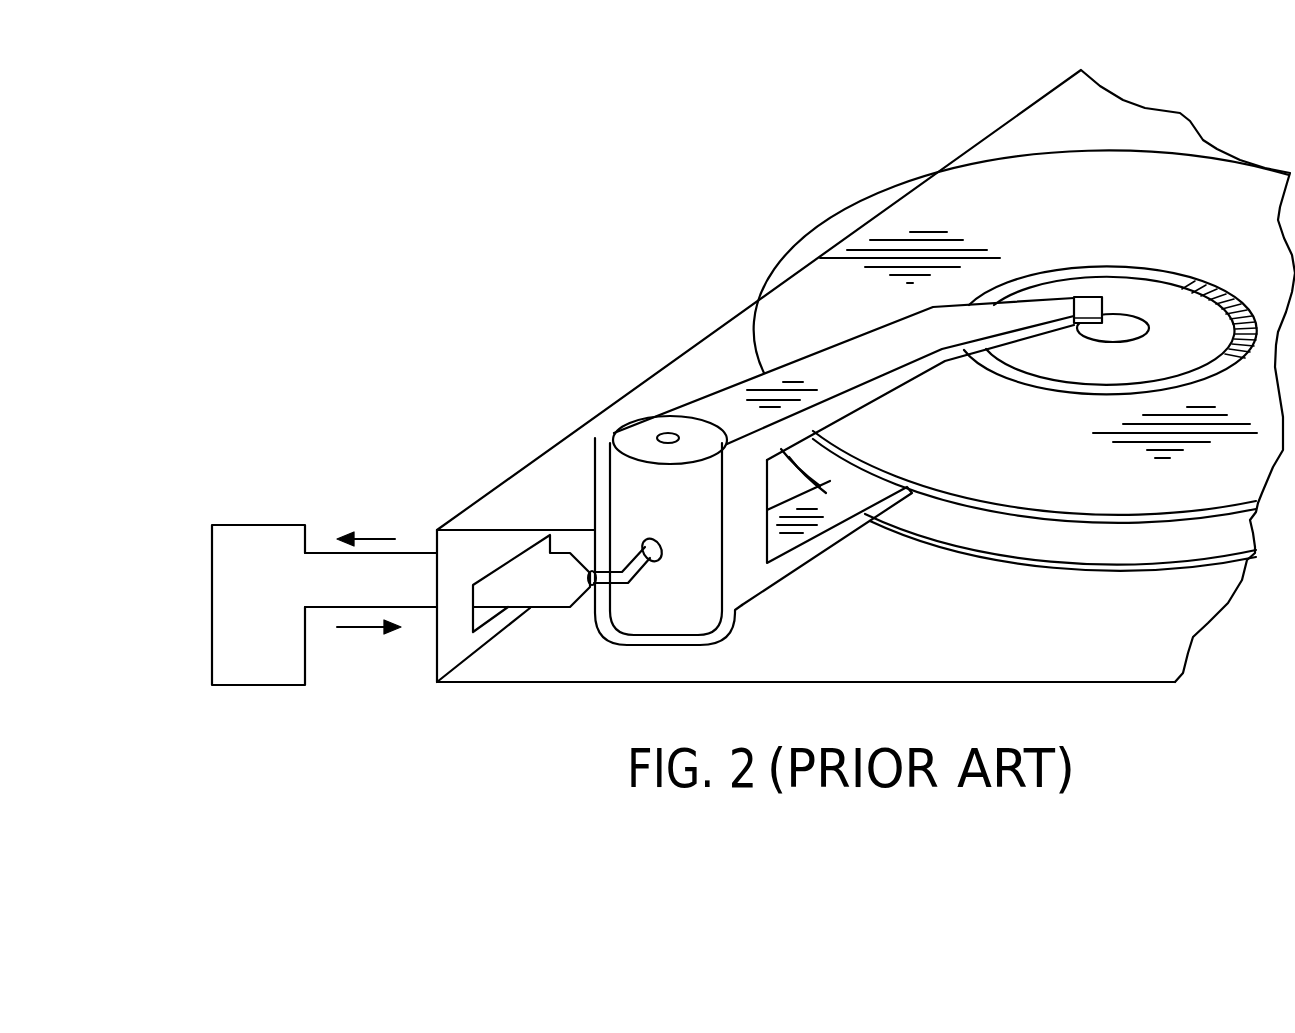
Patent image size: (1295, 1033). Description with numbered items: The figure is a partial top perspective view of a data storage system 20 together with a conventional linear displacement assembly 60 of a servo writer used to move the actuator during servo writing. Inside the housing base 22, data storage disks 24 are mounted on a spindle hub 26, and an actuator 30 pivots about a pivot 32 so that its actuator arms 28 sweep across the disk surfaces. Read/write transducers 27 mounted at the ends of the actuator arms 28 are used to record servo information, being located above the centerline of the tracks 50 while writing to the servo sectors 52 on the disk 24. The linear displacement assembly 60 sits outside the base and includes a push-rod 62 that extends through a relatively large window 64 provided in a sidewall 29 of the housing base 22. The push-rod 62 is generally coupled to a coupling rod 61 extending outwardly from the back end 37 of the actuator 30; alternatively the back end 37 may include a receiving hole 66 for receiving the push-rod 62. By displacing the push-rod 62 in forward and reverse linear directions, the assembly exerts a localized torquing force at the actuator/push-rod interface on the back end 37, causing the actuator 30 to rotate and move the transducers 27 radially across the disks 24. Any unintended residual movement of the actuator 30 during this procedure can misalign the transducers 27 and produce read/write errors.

The data storage system 20 is at (748, 245).
The housing base 22 is at (758, 680).
The data storage disks 24 is at (982, 451).
The spindle hub 26 is at (1151, 321).
The read/write transducers 27 is at (1087, 299).
The actuator arms 28 is at (878, 371).
The sidewall 29 is at (448, 640).
The actuator 30 is at (697, 400).
The pivot shaft 32 is at (656, 437).
The back end 37 is at (658, 497).
The tracks 50 is at (1117, 397).
The servo sectors 52 is at (1250, 310).
The linear displacement assembly 60 is at (260, 525).
The coupling rod 61 is at (640, 582).
The push-rod 62 is at (412, 553).
The window 64 is at (517, 622).
The receiving hole 66 is at (656, 538).